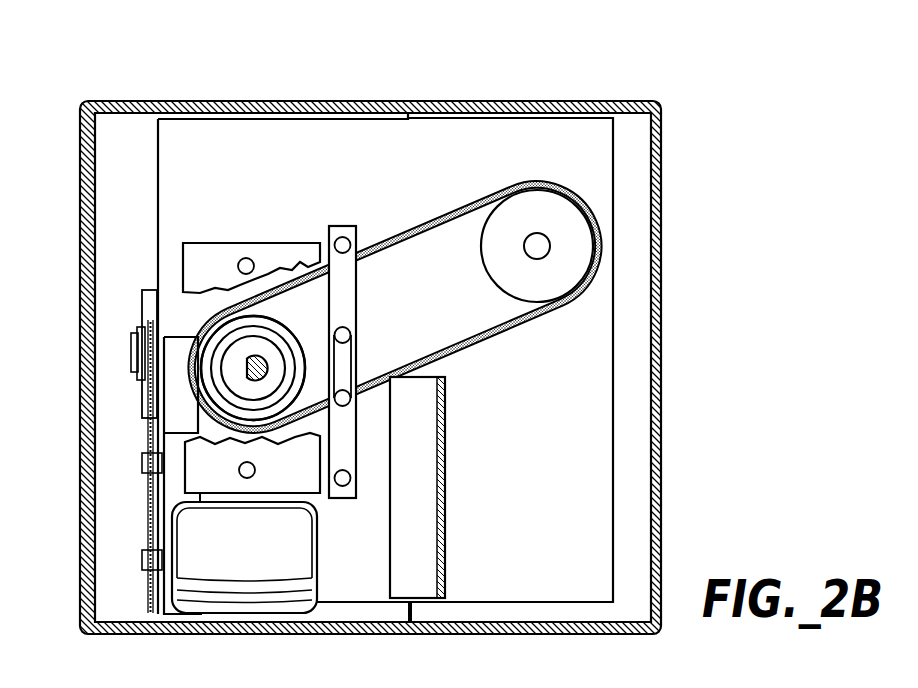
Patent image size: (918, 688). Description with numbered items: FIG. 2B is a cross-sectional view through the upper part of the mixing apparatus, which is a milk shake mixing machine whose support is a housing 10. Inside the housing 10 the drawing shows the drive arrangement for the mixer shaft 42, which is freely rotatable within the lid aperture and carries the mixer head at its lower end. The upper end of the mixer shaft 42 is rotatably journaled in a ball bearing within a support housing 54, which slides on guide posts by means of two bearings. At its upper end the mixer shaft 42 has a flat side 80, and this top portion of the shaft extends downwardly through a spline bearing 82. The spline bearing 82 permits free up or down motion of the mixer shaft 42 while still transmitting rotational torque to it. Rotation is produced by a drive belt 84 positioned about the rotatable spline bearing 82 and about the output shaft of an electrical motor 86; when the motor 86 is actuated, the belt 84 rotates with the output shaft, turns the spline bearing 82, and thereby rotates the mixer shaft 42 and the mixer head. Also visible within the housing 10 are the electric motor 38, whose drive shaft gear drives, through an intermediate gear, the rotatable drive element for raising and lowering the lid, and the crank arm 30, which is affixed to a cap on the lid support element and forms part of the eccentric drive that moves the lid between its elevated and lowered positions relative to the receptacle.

The housing 10 is at (488, 94).
The crank arm 30 is at (131, 370).
The electric motor 38 is at (232, 570).
The mixer shaft 42 is at (259, 356).
The support housing 54 is at (238, 343).
The flat side 80 is at (258, 360).
The spline bearing 82 is at (248, 390).
The drive belt 84 is at (473, 343).
The electrical motor 86 is at (544, 232).